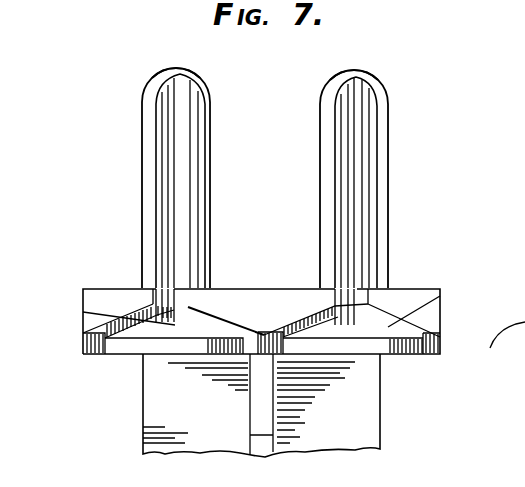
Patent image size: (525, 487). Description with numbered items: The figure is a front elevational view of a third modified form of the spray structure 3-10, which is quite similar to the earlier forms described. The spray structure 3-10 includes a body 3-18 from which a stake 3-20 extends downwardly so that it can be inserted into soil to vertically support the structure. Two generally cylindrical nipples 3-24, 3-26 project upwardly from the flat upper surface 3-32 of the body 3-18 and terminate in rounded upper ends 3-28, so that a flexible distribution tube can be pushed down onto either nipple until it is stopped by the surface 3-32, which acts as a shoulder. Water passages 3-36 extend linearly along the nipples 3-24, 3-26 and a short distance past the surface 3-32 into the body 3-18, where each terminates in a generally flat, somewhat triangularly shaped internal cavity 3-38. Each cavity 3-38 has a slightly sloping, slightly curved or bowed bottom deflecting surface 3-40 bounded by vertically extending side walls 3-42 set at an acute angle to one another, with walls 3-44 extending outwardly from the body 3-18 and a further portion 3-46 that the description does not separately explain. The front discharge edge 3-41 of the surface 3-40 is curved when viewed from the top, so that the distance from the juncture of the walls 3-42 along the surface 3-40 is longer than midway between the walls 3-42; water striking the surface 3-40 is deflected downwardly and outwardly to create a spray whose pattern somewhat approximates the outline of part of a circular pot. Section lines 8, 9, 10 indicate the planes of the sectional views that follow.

The spray structure 3-10 is at (198, 50).
The nipple 3-24 is at (142, 118).
The nipple 3-26 is at (389, 106).
The rounded upper end 3-28 is at (343, 73).
The water passage 3-36 is at (160, 160).
The body 3-18 is at (391, 278).
The flat upper surface 3-32 is at (129, 288).
The wall 3-44 is at (90, 258).
The central slot 3-46 is at (183, 288).
The side wall 3-42 is at (83, 311).
The internal cavity 3-38 is at (320, 314).
The front discharge edge 3-41 is at (142, 342).
The bottom deflecting surface 3-40 is at (172, 335).
The stake 3-20 is at (163, 436).
The section line 8 is at (87, 66).
The section line 9 is at (355, 90).
The section line 10 is at (95, 359).